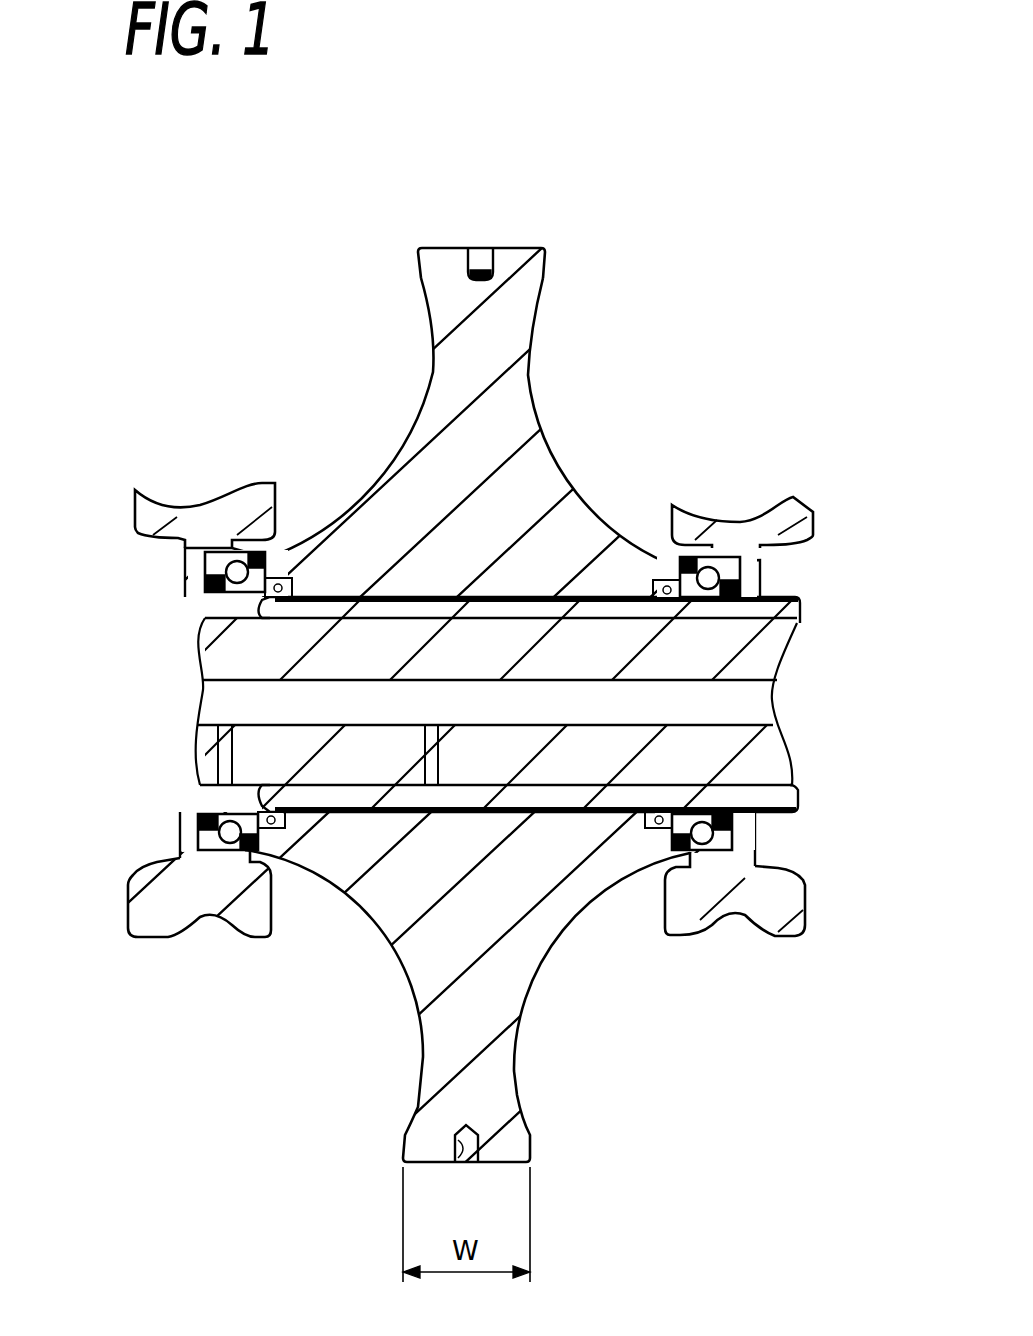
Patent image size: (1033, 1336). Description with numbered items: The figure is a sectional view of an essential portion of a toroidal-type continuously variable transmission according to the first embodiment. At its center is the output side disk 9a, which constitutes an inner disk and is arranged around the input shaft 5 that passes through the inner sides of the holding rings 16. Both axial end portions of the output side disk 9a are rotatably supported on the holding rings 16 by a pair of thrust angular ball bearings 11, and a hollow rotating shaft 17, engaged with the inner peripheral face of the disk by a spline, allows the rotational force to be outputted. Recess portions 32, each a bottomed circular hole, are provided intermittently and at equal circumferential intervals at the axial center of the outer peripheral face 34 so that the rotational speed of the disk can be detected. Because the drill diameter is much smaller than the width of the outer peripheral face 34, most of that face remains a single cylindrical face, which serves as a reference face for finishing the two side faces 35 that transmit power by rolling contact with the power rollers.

The input shaft 5 is at (240, 651).
The output side disk 9a is at (516, 668).
The thrust angular ball bearing 11 is at (232, 845).
The holding ring 16 is at (202, 558).
The hollow rotating shaft 17 is at (775, 806).
The recess portion 32 is at (480, 250).
The outer peripheral face 34 is at (531, 272).
The side face 35 is at (432, 380).